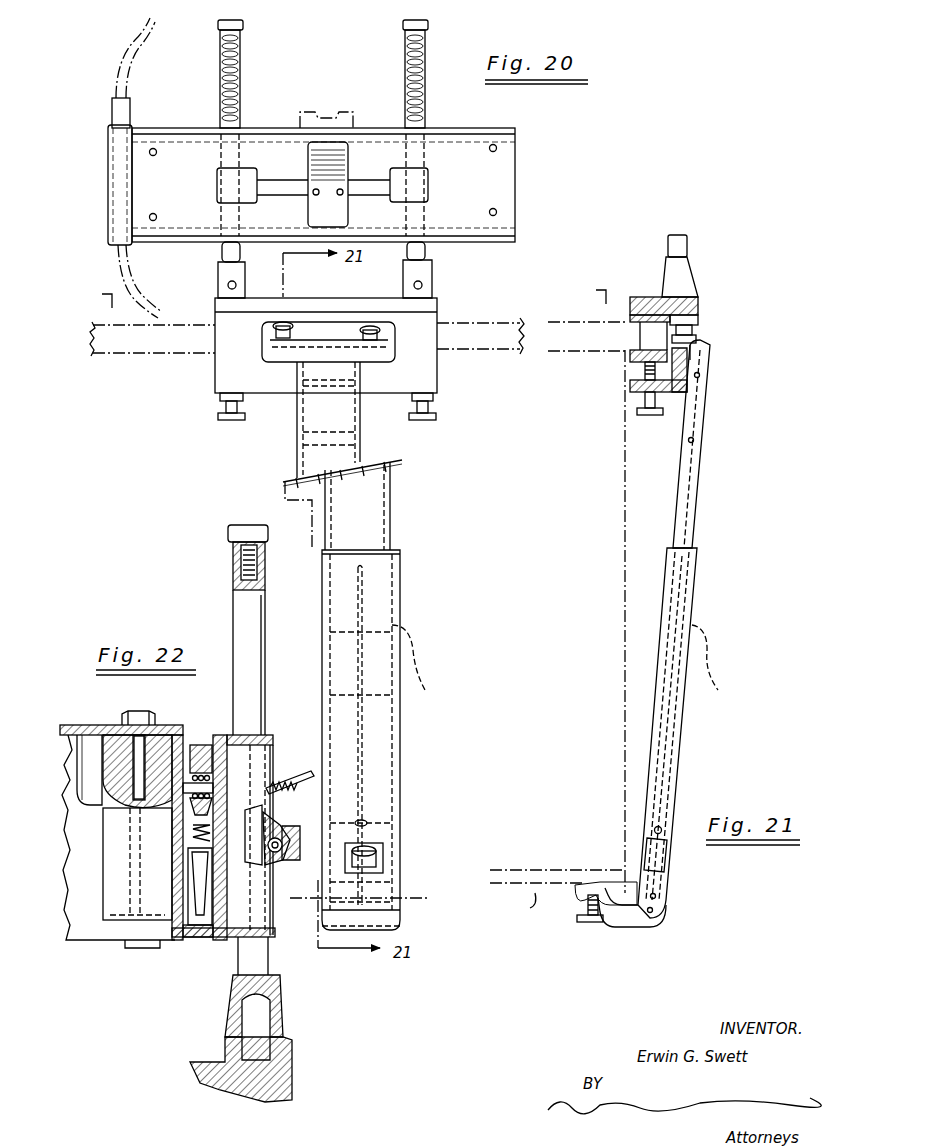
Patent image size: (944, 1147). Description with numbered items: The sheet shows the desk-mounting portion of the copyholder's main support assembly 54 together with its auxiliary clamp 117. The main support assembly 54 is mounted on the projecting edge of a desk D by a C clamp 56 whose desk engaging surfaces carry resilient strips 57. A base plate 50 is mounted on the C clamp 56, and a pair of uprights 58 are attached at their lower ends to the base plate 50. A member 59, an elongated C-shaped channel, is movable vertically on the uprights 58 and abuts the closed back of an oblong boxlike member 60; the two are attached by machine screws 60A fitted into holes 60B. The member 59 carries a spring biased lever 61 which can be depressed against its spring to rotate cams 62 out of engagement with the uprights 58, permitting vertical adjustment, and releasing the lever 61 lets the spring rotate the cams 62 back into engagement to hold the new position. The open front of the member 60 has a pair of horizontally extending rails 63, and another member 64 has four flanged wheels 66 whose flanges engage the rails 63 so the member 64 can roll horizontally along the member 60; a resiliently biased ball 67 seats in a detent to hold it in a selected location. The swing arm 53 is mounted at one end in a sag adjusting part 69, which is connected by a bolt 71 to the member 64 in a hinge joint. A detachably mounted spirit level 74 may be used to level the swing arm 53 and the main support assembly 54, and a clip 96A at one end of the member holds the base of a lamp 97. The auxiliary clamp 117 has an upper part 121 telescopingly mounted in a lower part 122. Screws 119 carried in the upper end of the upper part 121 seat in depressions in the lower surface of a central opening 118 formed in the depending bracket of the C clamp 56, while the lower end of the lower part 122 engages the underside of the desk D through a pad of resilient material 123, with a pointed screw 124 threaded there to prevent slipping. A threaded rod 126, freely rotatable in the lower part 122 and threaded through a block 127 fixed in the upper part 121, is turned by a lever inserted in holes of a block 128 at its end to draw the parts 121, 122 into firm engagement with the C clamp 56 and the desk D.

In FIG. 20, the base plate 50 is at (342, 302).
In FIG. 21, the base plate 50 is at (699, 305).
In FIG. 22, the base plate 50 is at (285, 1075).
In FIG. 22, the swing arm 53 is at (93, 755).
In FIG. 20, the main support assembly 54 is at (545, 178).
In FIG. 20, the C clamp 56 is at (440, 313).
In FIG. 21, the C clamp 56 is at (630, 386).
In FIG. 21, the resilient strips 57 is at (645, 348).
In FIG. 20, the uprights 58 is at (240, 58).
In FIG. 21, the uprights 58 is at (688, 246).
In FIG. 22, the uprights 58 is at (242, 610).
In FIG. 20, the member 59 is at (500, 125).
In FIG. 22, the member 59 is at (280, 936).
In FIG. 22, the boxlike member 60 is at (220, 940).
In FIG. 20, the machine screws 60A is at (497, 212).
In FIG. 20, the holes 60B is at (497, 148).
In FIG. 20, the spring biased lever 61 is at (345, 152).
In FIG. 22, the spring biased lever 61 is at (304, 778).
In FIG. 22, the cams 62 is at (259, 866).
In FIG. 22, the rails 63 is at (200, 742).
In FIG. 22, the member 64 is at (178, 938).
In FIG. 22, the flanged wheels 66 is at (212, 745).
In FIG. 22, the ball 67 is at (243, 830).
In FIG. 22, the sag adjusting part 69 is at (90, 945).
In FIG. 22, the bolt 71 is at (134, 712).
In FIG. 20, the spirit level 74 is at (345, 100).
In FIG. 20, the clip 96A is at (120, 203).
In FIG. 20, the lamp 97 is at (110, 128).
In FIG. 20, the auxiliary clamp 117 is at (403, 606).
In FIG. 21, the auxiliary clamp 117 is at (699, 568).
In FIG. 20, the central opening 118 is at (352, 330).
In FIG. 21, the central opening 118 is at (700, 326).
In FIG. 20, the screws 119 is at (283, 322).
In FIG. 21, the screws 119 is at (700, 340).
In FIG. 20, the upper part 121 is at (385, 508).
In FIG. 21, the upper part 121 is at (690, 482).
In FIG. 20, the lower part 122 is at (385, 740).
In FIG. 21, the lower part 122 is at (682, 724).
In FIG. 21, the pad of resilient material 123 is at (592, 884).
In FIG. 21, the pointed screw 124 is at (586, 922).
In FIG. 20, the threaded rod 126 is at (368, 787).
In FIG. 21, the threaded rod 126 is at (670, 777).
In FIG. 20, the block 127 is at (395, 695).
In FIG. 21, the block 127 is at (695, 700).
In FIG. 20, the block 128 is at (383, 855).
In FIG. 21, the block 128 is at (670, 860).
In FIG. 20, the desk D is at (304, 322).
In FIG. 21, the desk D is at (559, 601).